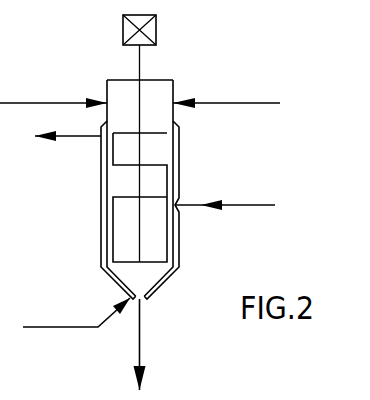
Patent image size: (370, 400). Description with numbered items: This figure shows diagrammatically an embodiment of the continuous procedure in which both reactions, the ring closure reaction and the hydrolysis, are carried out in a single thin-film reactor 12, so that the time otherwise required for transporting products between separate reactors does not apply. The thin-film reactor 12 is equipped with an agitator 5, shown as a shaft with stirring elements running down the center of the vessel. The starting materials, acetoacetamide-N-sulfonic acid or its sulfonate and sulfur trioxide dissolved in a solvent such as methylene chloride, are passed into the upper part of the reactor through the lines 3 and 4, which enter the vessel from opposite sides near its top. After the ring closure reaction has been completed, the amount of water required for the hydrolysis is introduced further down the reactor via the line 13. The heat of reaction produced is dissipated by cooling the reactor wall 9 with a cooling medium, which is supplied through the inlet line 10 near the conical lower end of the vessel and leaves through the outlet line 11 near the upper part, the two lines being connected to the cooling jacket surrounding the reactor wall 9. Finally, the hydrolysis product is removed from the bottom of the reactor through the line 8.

The line 3 is at (40, 103).
The line 4 is at (250, 103).
The agitator 5 is at (128, 234).
The line 8 is at (140, 330).
The reactor wall 9 is at (179, 256).
The inlet line 10 is at (70, 327).
The outlet line 11 is at (70, 136).
The thin-film reactor 12 is at (88, 205).
The line 13 is at (248, 205).